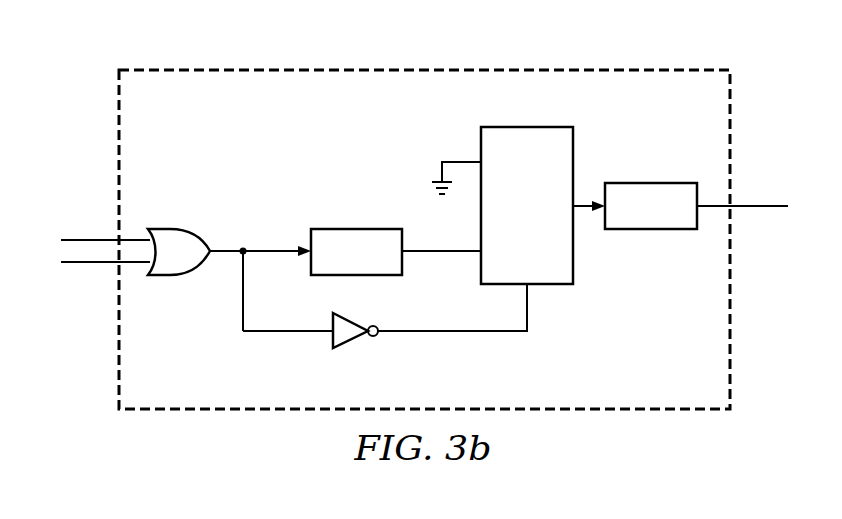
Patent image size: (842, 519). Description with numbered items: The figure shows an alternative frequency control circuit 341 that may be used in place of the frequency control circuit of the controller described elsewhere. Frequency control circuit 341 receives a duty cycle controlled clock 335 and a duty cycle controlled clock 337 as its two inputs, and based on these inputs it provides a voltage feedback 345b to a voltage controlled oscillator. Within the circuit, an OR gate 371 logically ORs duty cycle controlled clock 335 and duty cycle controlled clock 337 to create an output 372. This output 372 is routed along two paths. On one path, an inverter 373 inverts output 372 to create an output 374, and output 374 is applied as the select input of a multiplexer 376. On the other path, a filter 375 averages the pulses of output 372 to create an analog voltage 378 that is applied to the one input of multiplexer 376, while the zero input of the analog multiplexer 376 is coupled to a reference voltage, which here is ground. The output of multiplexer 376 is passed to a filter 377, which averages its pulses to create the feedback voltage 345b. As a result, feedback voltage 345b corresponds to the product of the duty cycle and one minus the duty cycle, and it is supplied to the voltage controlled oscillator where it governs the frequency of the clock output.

The frequency control circuit 341 is at (447, 66).
The duty cycle controlled clock 335 is at (84, 240).
The duty cycle controlled clock 337 is at (84, 262).
The OR gate 371 is at (188, 230).
The output 372 is at (266, 250).
The filter 375 is at (357, 228).
The analog voltage 378 is at (430, 254).
The multiplexer 376 is at (573, 256).
The filter 377 is at (652, 183).
The voltage feedback 345b is at (764, 204).
The inverter 373 is at (352, 340).
The output 374 is at (447, 333).